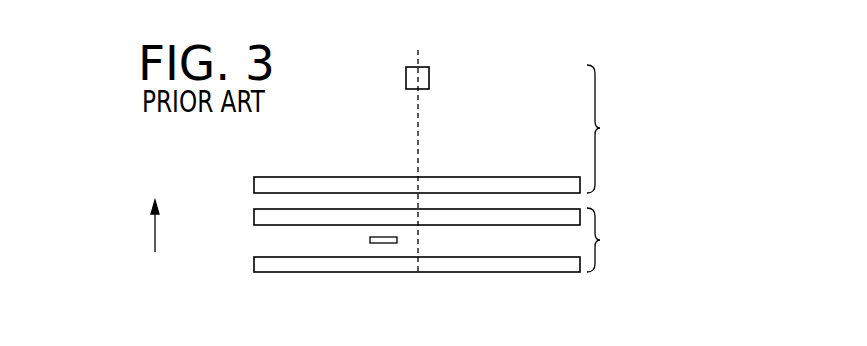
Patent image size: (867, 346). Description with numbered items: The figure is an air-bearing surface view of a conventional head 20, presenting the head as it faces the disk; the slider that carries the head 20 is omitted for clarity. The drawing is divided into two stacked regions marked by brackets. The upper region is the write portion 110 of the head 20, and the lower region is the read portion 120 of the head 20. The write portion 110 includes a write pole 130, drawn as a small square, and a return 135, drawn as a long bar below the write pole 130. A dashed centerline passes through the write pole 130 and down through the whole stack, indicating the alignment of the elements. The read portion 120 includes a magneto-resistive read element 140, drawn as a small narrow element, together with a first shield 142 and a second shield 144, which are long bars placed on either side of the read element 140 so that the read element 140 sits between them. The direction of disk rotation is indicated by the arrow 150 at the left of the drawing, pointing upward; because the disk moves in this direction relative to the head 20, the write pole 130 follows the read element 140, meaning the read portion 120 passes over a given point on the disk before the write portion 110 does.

The head 20 is at (666, 146).
The write portion 110 is at (616, 129).
The read portion 120 is at (615, 240).
The write pole 130 is at (429, 80).
The return 135 is at (455, 177).
The magneto-resistive (MR) read element 140 is at (370, 240).
The first shield 142 is at (253, 217).
The second shield 144 is at (253, 263).
The arrow 150 is at (152, 236).